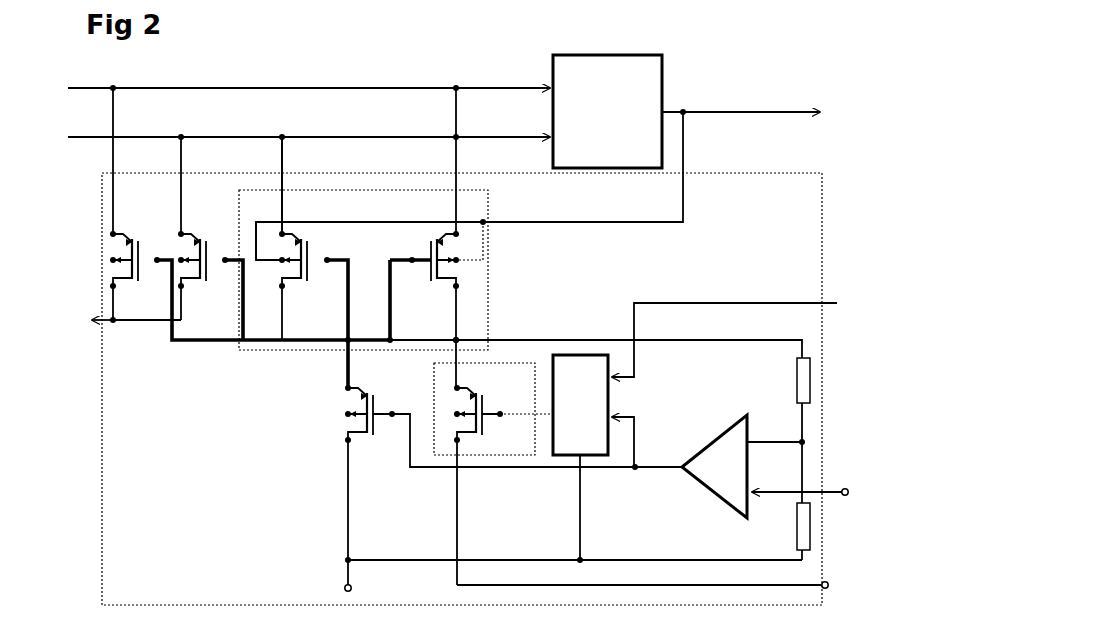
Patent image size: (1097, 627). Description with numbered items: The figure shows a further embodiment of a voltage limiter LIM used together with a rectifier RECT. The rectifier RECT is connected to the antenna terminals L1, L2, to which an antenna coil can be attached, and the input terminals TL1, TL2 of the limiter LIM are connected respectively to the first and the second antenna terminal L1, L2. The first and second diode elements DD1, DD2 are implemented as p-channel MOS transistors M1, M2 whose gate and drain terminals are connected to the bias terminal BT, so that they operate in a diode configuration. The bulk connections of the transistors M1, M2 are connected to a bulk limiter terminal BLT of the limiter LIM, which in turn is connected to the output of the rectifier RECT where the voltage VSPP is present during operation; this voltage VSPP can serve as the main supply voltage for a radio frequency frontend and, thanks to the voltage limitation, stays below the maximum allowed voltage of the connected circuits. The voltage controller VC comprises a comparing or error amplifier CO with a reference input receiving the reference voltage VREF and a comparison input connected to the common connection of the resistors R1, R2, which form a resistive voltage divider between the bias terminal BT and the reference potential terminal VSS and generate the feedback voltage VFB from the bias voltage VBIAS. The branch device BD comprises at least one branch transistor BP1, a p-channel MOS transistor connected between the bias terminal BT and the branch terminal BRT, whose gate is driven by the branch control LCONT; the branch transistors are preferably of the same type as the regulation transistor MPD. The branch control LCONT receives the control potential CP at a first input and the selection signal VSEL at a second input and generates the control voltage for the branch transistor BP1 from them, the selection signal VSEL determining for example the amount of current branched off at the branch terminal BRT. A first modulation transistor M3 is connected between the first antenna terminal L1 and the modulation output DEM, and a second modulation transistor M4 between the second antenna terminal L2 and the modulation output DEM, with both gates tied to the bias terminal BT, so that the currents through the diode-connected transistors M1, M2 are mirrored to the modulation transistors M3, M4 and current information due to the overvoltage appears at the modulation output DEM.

The voltage limiter LIM is at (462, 389).
The first antenna terminal L1 is at (297, 89).
The second antenna terminal L2 is at (297, 138).
The rectifier RECT is at (607, 111).
The output voltage VSPP is at (741, 94).
The bulk limiter terminal BLT is at (493, 186).
The first input terminal TL1 is at (482, 161).
The second input terminal TL2 is at (308, 185).
The first diode element DD1 is at (416, 270).
The second diode element DD2 is at (324, 241).
The first modulation transistor M3 is at (142, 204).
The second modulation transistor M4 is at (200, 228).
The p-channel MOS transistor M2 is at (299, 238).
The p-channel MOS transistor M1 is at (481, 309).
The modulation output DEM is at (104, 301).
The bias terminal BT is at (290, 330).
The bias voltage VBIAS is at (596, 338).
The regulation transistor MPD is at (451, 485).
The branch device BD is at (485, 452).
The branch transistor BP1 is at (503, 476).
The branch control LCONT is at (580, 459).
The selection signal VSEL is at (724, 327).
The control potential CP is at (640, 443).
The comparing amplifier CO is at (714, 466).
The voltage controller VC is at (668, 518).
The feedback voltage VFB is at (776, 431).
The reference voltage VREF is at (812, 474).
The resistor R1 is at (783, 430).
The resistor R2 is at (779, 531).
The reference potential terminal VSS is at (573, 574).
The branch terminal BRT is at (661, 564).